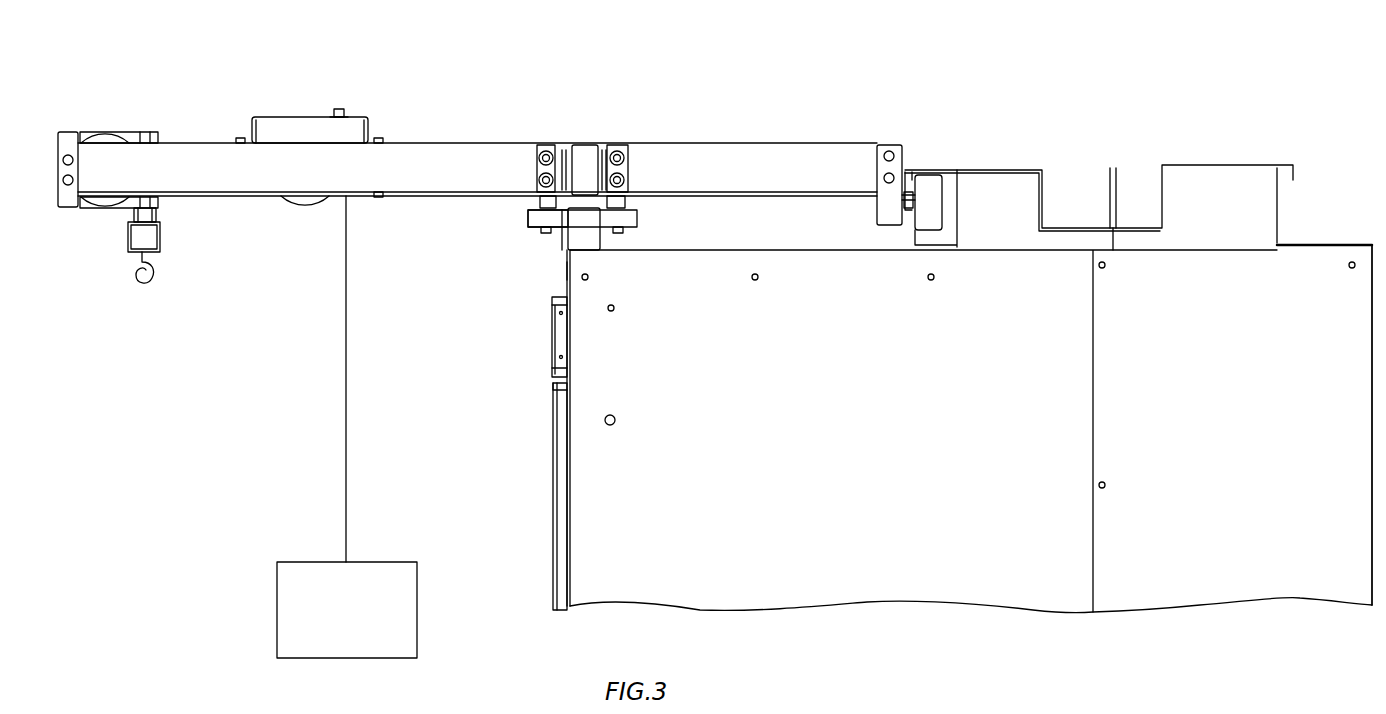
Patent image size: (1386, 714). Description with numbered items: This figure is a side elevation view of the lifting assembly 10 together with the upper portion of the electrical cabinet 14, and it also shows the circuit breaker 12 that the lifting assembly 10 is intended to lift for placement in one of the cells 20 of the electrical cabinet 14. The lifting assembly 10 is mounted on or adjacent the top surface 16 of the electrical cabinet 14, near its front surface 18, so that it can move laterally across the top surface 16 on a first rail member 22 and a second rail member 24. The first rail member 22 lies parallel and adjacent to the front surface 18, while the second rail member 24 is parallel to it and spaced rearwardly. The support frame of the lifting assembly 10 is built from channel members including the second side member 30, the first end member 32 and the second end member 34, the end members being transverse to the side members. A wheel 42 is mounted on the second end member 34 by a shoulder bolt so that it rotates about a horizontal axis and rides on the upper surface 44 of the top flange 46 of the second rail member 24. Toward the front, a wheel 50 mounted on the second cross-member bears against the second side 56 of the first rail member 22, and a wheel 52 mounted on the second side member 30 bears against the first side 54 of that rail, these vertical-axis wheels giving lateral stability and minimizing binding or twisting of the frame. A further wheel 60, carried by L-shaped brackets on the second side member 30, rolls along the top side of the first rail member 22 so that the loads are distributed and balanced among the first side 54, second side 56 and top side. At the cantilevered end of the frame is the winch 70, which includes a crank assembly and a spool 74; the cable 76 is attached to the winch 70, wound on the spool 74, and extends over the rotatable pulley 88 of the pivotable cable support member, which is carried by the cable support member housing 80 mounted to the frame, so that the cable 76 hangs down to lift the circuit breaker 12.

The lifting assembly 10 is at (434, 100).
The circuit breaker 12 is at (276, 608).
The electrical cabinet 14 is at (1350, 242).
The top surface 16 is at (1300, 243).
The front surface 18 is at (560, 285).
The cells 20 is at (552, 445).
The first rail member 22 is at (556, 272).
The second rail member 24 is at (970, 238).
The second side member 30 is at (485, 152).
The first end member 32 is at (65, 133).
The second end member 34 is at (880, 205).
The wheel 42 is at (925, 240).
The upper surface 44 is at (950, 178).
The top flange 46 is at (908, 182).
The wheel 50 is at (640, 217).
The wheel 52 is at (535, 218).
The first side 54 is at (566, 240).
The second side 56 is at (604, 240).
The wheel 60 is at (585, 160).
The winch 70 is at (118, 235).
The spool 74 is at (110, 131).
The cable 76 is at (344, 413).
The cable support member housing 80 is at (262, 117).
The pulley 88 is at (300, 197).